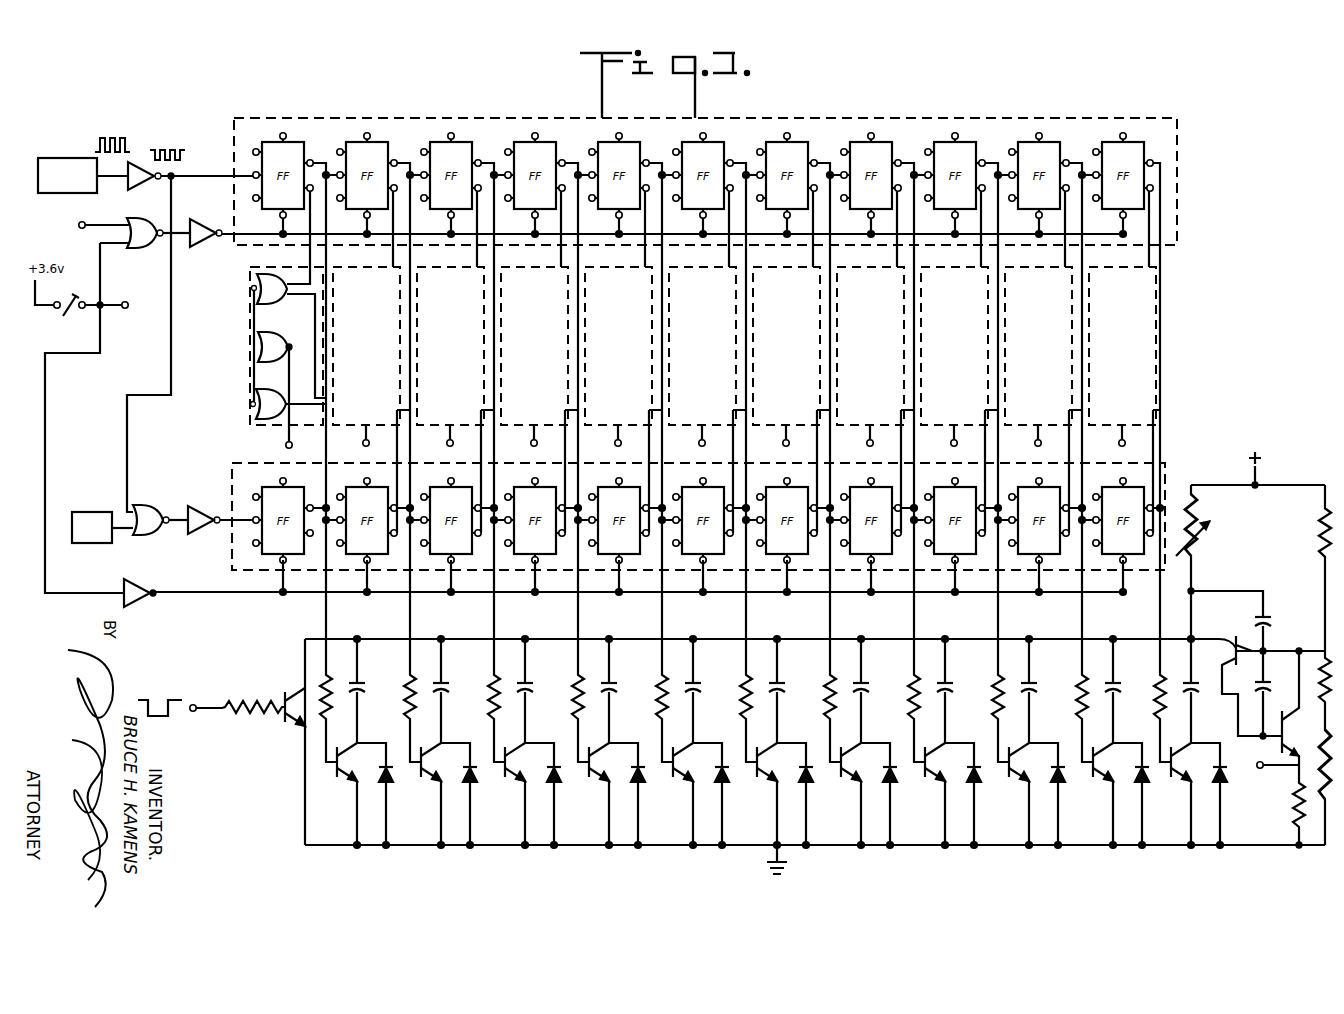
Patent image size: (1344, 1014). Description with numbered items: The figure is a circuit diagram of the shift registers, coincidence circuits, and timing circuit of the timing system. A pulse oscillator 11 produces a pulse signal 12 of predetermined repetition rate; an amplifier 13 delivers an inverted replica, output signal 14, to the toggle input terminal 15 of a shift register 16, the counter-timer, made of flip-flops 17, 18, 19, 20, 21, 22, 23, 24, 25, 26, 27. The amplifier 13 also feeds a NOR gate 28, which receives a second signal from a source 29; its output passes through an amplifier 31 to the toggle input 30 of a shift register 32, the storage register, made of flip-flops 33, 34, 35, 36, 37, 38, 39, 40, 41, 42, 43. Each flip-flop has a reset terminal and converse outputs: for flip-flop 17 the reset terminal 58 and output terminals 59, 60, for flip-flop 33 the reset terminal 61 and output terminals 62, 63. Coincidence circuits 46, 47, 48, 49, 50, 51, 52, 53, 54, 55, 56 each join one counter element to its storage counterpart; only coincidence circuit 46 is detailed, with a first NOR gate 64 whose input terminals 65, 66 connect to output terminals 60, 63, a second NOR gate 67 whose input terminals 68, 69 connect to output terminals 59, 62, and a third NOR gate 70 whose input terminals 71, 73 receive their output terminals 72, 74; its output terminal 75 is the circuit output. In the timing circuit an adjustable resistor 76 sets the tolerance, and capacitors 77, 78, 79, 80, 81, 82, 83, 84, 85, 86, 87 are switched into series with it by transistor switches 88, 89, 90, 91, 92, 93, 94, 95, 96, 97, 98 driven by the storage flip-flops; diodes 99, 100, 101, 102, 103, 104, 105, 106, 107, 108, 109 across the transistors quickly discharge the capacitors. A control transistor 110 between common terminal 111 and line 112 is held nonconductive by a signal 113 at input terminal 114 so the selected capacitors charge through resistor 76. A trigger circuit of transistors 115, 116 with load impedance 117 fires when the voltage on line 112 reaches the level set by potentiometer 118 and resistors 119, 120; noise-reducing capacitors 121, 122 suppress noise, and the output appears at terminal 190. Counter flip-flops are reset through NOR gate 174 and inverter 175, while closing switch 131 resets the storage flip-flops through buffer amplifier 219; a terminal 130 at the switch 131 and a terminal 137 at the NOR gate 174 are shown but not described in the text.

The pulse oscillator 11 is at (66, 158).
The pulse signal 12 is at (112, 136).
The amplifier 13 is at (138, 162).
The output signal 14 is at (178, 148).
The toggle input terminal 15 is at (252, 178).
The shift register 16 is at (235, 140).
The flip-flop 17 is at (297, 140).
The flip-flop 18 is at (381, 140).
The flip-flop 19 is at (465, 140).
The flip-flop 20 is at (549, 140).
The flip-flop 21 is at (633, 140).
The flip-flop 22 is at (717, 140).
The flip-flop 23 is at (801, 140).
The flip-flop 24 is at (885, 140).
The flip-flop 25 is at (969, 140).
The flip-flop 26 is at (1053, 140).
The flip-flop 27 is at (1137, 140).
The NOR gate 28 is at (152, 505).
The source 29 is at (90, 512).
The toggle input 30 is at (251, 523).
The amplifier 31 is at (200, 506).
The shift register 32 is at (232, 570).
The flip-flop 33 is at (278, 482).
The flip-flop 34 is at (358, 561).
The flip-flop 35 is at (442, 561).
The flip-flop 36 is at (526, 561).
The flip-flop 37 is at (610, 561).
The flip-flop 38 is at (694, 561).
The flip-flop 39 is at (778, 561).
The flip-flop 40 is at (862, 561).
The flip-flop 41 is at (946, 561).
The flip-flop 42 is at (1030, 561).
The flip-flop 43 is at (1114, 561).
The coincidence circuit 46 is at (250, 380).
The coincidence circuit 47 is at (366, 347).
The coincidence circuit 48 is at (450, 347).
The coincidence circuit 49 is at (534, 347).
The coincidence circuit 50 is at (618, 347).
The coincidence circuit 51 is at (702, 347).
The coincidence circuit 52 is at (786, 347).
The coincidence circuit 53 is at (870, 347).
The coincidence circuit 54 is at (954, 347).
The coincidence circuit 55 is at (1038, 347).
The coincidence circuit 56 is at (1122, 347).
The reset terminal 58 is at (279, 215).
The output terminal 59 is at (313, 161).
The output terminal 60 is at (306, 190).
The reset terminal 61 is at (275, 562).
The output terminal 62 is at (308, 503).
The output terminal 63 is at (312, 538).
The first NOR gate 64 is at (255, 281).
The first input terminal 65 is at (292, 266).
The second input terminal 66 is at (300, 314).
The second NOR gate 67 is at (268, 392).
The first input terminal 68 is at (294, 401).
The second input terminal 69 is at (284, 431).
The third NOR gate 70 is at (288, 344).
The first input terminal 71 is at (256, 340).
The output terminal 72 is at (251, 290).
The second input terminal 73 is at (257, 353).
The output terminal 74 is at (250, 404).
The output terminal 75 is at (284, 447).
The resistor 76 is at (1205, 546).
The capacitor 77 is at (368, 684).
The capacitor 78 is at (452, 684).
The capacitor 79 is at (536, 684).
The capacitor 80 is at (620, 684).
The capacitor 81 is at (704, 684).
The capacitor 82 is at (788, 684).
The capacitor 83 is at (872, 684).
The capacitor 84 is at (956, 684).
The capacitor 85 is at (1040, 684).
The capacitor 86 is at (1124, 684).
The capacitor 87 is at (1202, 684).
The transistor switch 88 is at (336, 777).
The transistor switch 89 is at (420, 777).
The transistor switch 90 is at (504, 777).
The transistor switch 91 is at (588, 777).
The transistor switch 92 is at (672, 777).
The transistor switch 93 is at (756, 777).
The transistor switch 94 is at (840, 777).
The transistor switch 95 is at (924, 777).
The transistor switch 96 is at (1008, 777).
The transistor switch 97 is at (1092, 777).
The transistor switch 98 is at (1170, 777).
The diode 99 is at (389, 786).
The diode 100 is at (473, 786).
The diode 101 is at (557, 786).
The diode 102 is at (641, 786).
The diode 103 is at (725, 786).
The diode 104 is at (809, 786).
The diode 105 is at (893, 786).
The diode 106 is at (977, 786).
The diode 107 is at (1061, 786).
The diode 108 is at (1145, 786).
The diode 109 is at (1223, 786).
The control transistor 110 is at (285, 690).
The common terminal 111 is at (305, 846).
The line 112 is at (303, 640).
The signal 113 is at (156, 698).
The input terminal 114 is at (194, 712).
The transistor 115 is at (1234, 640).
The transistor 116 is at (1280, 740).
The load impedance 117 is at (1296, 812).
The potentiometer 118 is at (1322, 648).
The resistor 119 is at (1322, 535).
The resistor 120 is at (1322, 810).
The first noise-reducing capacitor 121 is at (1268, 612).
The second noise-reducing capacitor 122 is at (1254, 690).
The terminal 130 is at (125, 302).
The switch 131 is at (78, 312).
The terminal 137 is at (80, 228).
The NOR gate 174 is at (145, 218).
The inverter 175 is at (217, 250).
The output terminal 190 is at (1260, 769).
The buffer amplifier 219 is at (139, 574).